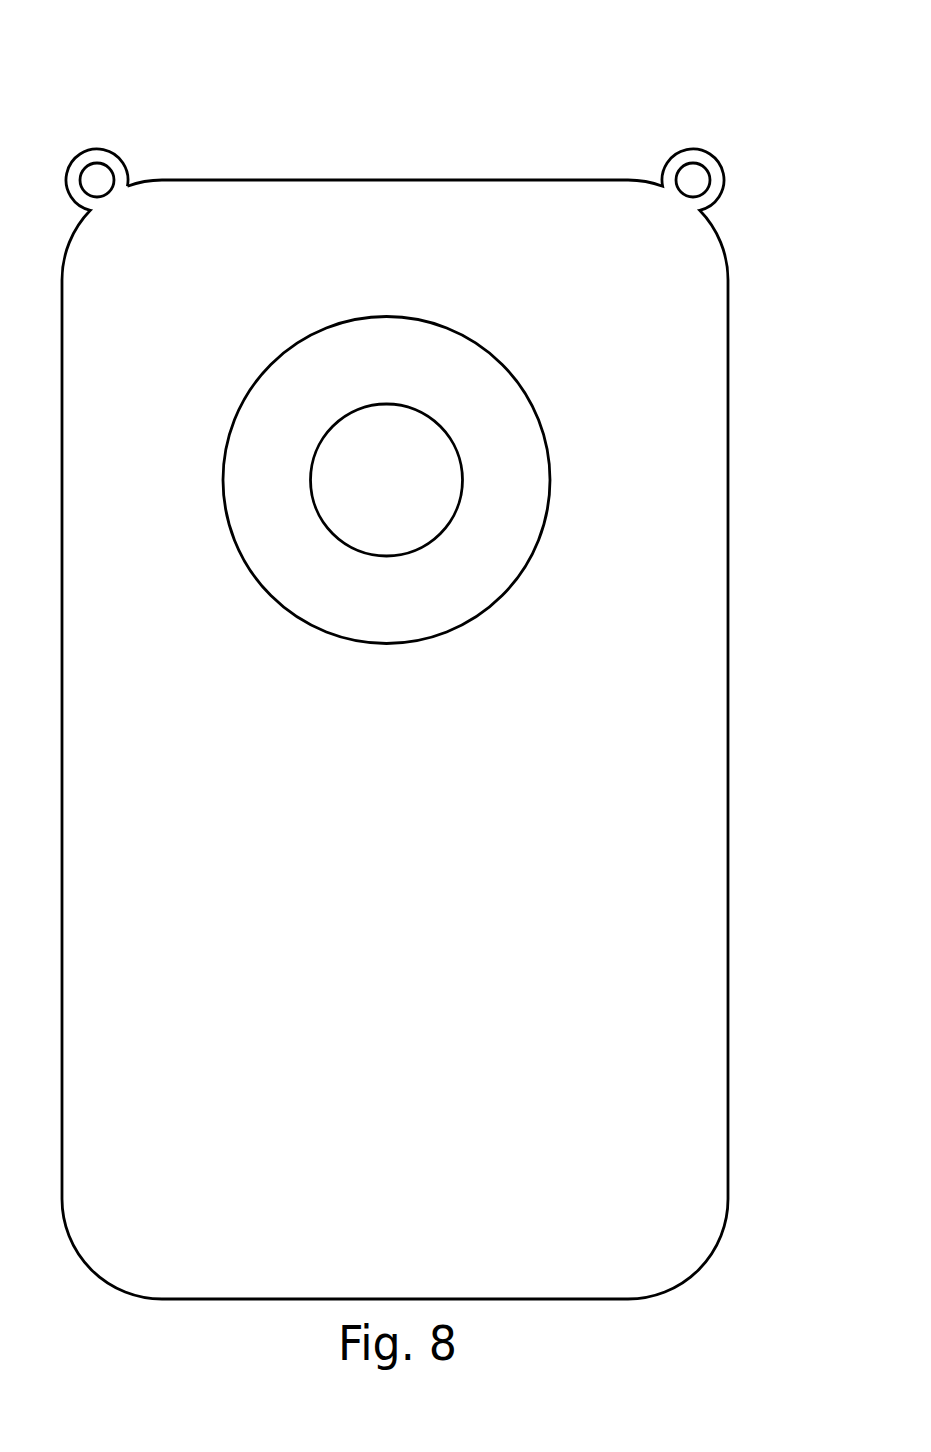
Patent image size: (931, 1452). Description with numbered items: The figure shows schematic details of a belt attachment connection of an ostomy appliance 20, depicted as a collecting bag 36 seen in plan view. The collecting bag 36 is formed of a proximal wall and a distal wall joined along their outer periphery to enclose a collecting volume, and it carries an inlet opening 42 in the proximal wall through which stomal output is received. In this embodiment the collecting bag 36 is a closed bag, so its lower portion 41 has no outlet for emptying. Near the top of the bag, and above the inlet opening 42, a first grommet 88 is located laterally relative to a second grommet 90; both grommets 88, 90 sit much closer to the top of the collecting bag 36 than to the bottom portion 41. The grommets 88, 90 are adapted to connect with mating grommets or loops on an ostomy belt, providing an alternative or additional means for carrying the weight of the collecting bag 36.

The appliance body 20 is at (487, 88).
The collecting bag 36 is at (690, 717).
The lower portion 41 is at (633, 1250).
The inlet opening 42 is at (417, 493).
The first grommet 88 is at (692, 180).
The second grommet 90 is at (97, 182).